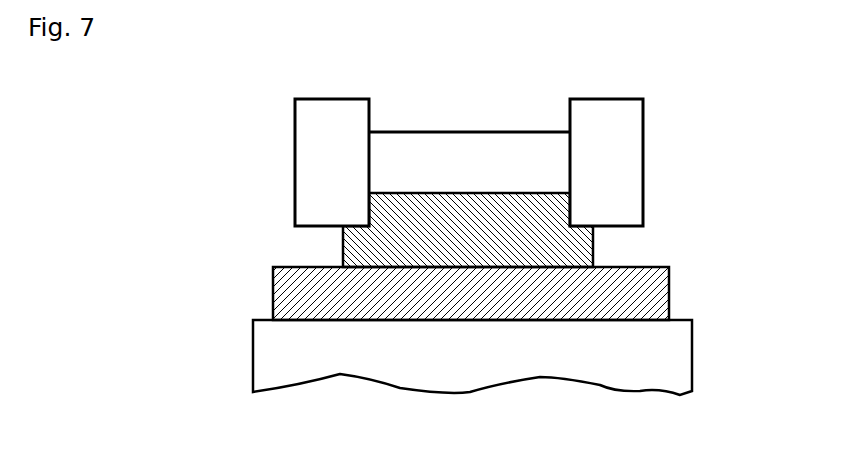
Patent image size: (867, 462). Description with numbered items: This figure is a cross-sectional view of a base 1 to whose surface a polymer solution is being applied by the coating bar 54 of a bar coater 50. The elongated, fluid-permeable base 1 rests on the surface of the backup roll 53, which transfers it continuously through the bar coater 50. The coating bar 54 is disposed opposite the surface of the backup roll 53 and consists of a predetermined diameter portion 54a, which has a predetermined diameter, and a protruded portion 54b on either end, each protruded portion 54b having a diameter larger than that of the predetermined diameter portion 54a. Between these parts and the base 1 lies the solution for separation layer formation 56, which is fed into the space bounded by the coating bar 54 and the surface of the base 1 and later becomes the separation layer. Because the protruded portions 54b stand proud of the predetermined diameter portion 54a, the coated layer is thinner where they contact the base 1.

The bar coater 50 is at (662, 143).
The backup roll 53 is at (692, 352).
The base 1 is at (625, 285).
The solution for separation layer formation 56 is at (563, 243).
The coating bar 54 is at (508, 132).
The predetermined diameter portion 54a is at (407, 155).
The protruded portion 54b is at (308, 186).